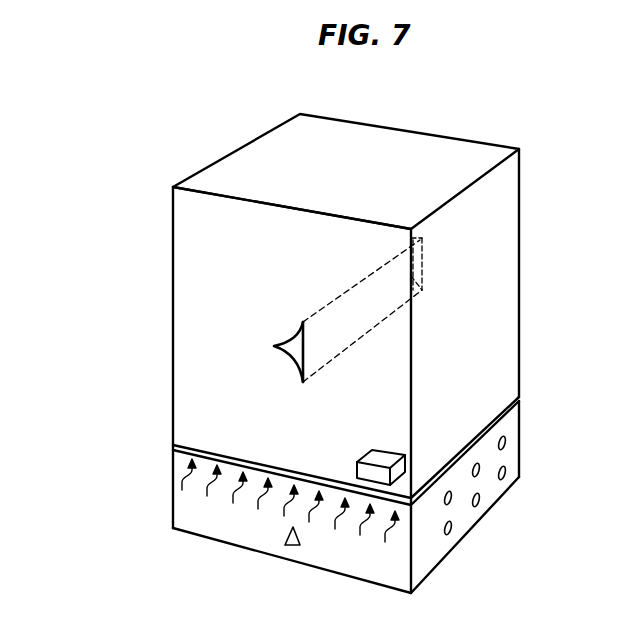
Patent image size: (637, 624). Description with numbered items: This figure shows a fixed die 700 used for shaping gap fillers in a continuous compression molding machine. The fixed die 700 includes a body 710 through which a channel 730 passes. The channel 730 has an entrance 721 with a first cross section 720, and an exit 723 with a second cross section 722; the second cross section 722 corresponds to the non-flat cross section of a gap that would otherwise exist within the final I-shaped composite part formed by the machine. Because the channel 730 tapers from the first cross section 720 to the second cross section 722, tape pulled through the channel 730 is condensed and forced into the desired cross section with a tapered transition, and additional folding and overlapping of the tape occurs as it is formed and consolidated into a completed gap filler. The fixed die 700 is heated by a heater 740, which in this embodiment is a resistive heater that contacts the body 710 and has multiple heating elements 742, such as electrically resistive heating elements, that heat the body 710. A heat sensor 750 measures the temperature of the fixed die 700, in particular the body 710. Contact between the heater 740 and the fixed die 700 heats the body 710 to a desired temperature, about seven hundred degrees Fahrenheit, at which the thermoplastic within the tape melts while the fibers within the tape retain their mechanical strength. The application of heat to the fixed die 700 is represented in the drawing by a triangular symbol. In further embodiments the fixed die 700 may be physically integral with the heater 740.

The fixed die 700 is at (134, 213).
The body 710 is at (499, 332).
The first cross section 720 is at (291, 370).
The entrance 721 is at (284, 337).
The second cross section 722 is at (422, 263).
The exit 723 is at (430, 238).
The channel 730 is at (366, 334).
The heater 740 is at (445, 554).
The heating elements 742 is at (506, 442).
The heat sensor 750 is at (385, 461).